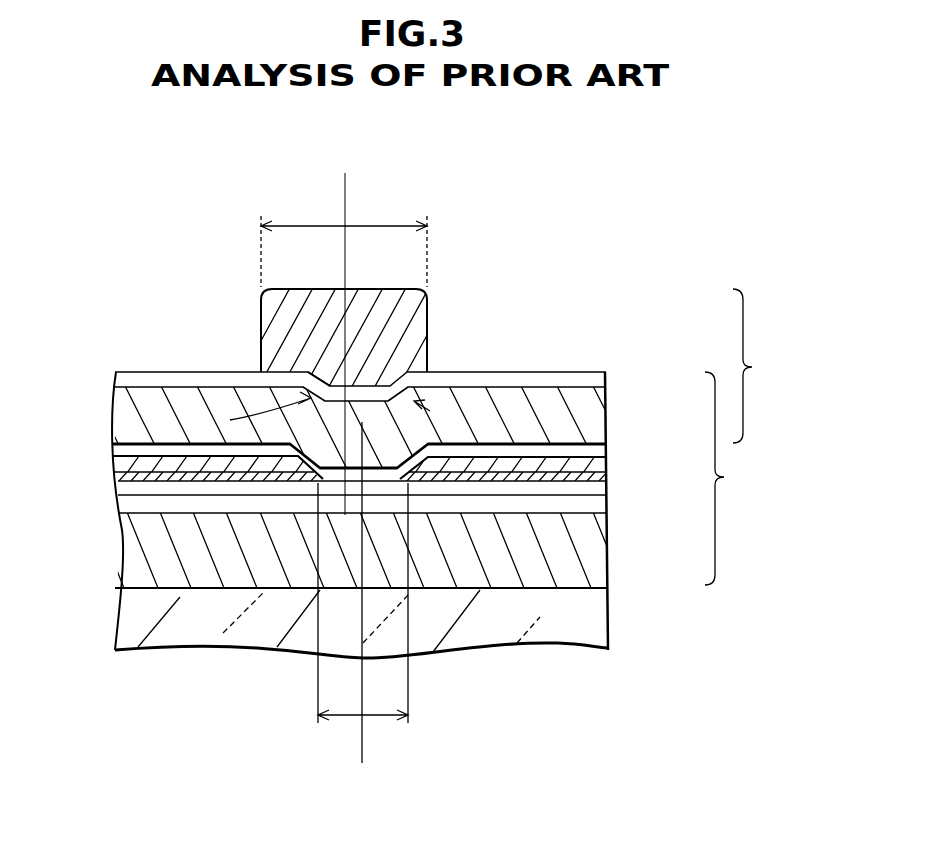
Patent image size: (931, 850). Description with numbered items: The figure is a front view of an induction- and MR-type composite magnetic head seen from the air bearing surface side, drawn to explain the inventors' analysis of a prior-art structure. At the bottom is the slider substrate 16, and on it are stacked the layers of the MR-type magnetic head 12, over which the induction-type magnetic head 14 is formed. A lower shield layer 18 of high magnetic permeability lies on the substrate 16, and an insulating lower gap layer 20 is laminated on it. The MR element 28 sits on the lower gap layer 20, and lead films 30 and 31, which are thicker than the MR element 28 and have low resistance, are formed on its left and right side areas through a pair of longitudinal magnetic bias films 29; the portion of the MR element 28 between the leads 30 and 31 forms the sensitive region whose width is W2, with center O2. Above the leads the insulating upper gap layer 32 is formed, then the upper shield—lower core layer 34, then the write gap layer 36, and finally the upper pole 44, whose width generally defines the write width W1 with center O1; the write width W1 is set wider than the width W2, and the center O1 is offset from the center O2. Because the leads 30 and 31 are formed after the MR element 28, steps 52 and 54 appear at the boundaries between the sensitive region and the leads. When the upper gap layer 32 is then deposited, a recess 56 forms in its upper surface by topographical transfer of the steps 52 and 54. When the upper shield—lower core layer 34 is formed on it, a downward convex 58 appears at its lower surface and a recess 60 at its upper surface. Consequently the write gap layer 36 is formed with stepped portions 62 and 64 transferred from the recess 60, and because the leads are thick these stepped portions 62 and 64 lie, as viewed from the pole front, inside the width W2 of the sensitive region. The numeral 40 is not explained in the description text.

The MR-type magnetic head 12 is at (735, 478).
The induction-type magnetic head 14 is at (764, 366).
The substrate 16 is at (132, 623).
The lower shield layer 18 is at (132, 565).
The lower gap layer 20 is at (145, 509).
The MR element 28 is at (143, 490).
The longitudinal magnetic bias films 29 is at (130, 477).
The lead conductor 30 is at (607, 461).
The lead conductor 31 is at (122, 462).
The upper gap layer 32 is at (607, 447).
The upper shield—lower core layer 34 is at (607, 413).
The write gap layer 36 is at (607, 375).
The gate 40 is at (355, 300).
The upper pole 44 is at (287, 327).
The step 52 is at (440, 467).
The step 54 is at (287, 462).
The recess 56 is at (330, 384).
The downward convex 58 is at (332, 387).
The recess 60 is at (427, 335).
The stepped portion 62 is at (430, 411).
The stepped portion 64 is at (230, 420).
The write width W1 is at (302, 224).
The width of the sensitive region W2 is at (373, 718).
The center of the upper pole width O1 is at (345, 195).
The center of the width of the MR element sensitive region O2 is at (362, 740).